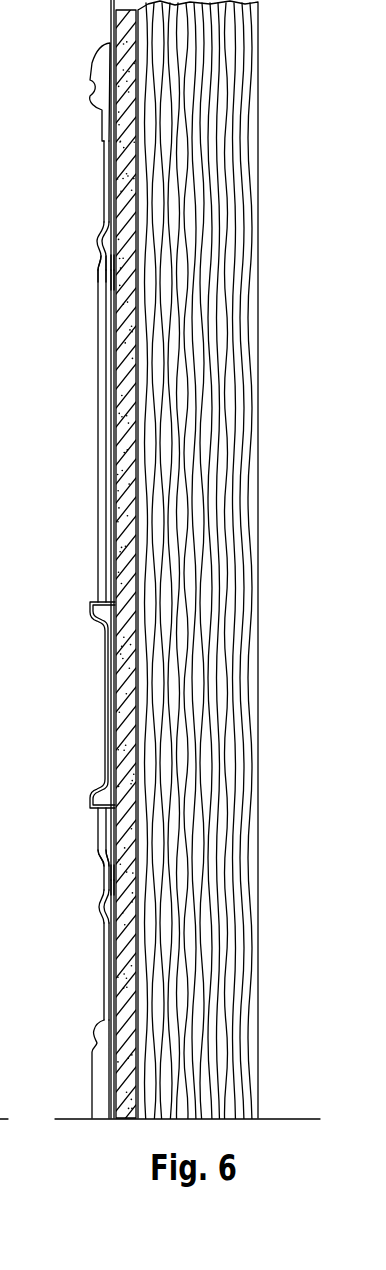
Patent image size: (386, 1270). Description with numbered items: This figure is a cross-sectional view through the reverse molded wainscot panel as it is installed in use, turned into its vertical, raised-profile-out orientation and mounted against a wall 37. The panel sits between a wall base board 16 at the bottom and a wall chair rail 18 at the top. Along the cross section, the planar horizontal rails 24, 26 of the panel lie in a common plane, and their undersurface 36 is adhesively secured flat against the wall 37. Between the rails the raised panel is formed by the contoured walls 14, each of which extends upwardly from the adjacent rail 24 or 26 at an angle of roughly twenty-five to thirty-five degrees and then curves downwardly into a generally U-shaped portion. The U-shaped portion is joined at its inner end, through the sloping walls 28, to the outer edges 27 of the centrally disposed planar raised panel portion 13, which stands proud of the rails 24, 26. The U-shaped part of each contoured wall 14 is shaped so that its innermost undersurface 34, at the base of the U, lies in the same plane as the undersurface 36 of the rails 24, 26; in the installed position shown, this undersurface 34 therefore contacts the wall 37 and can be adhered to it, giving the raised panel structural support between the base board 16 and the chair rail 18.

The planar raised panel portion 13 is at (97, 497).
The contoured walls 14 is at (95, 242).
The wall base board 16 is at (100, 1080).
The wall chair rail 18 is at (94, 72).
The horizontal rail 24 is at (103, 961).
The horizontal rail 26 is at (105, 198).
The outer edges 27 is at (97, 290).
The sloping walls 28 is at (113, 280).
The innermost undersurface 34 is at (115, 263).
The undersurface of the stiles and rails 36 is at (115, 172).
The wall 37 is at (125, 458).